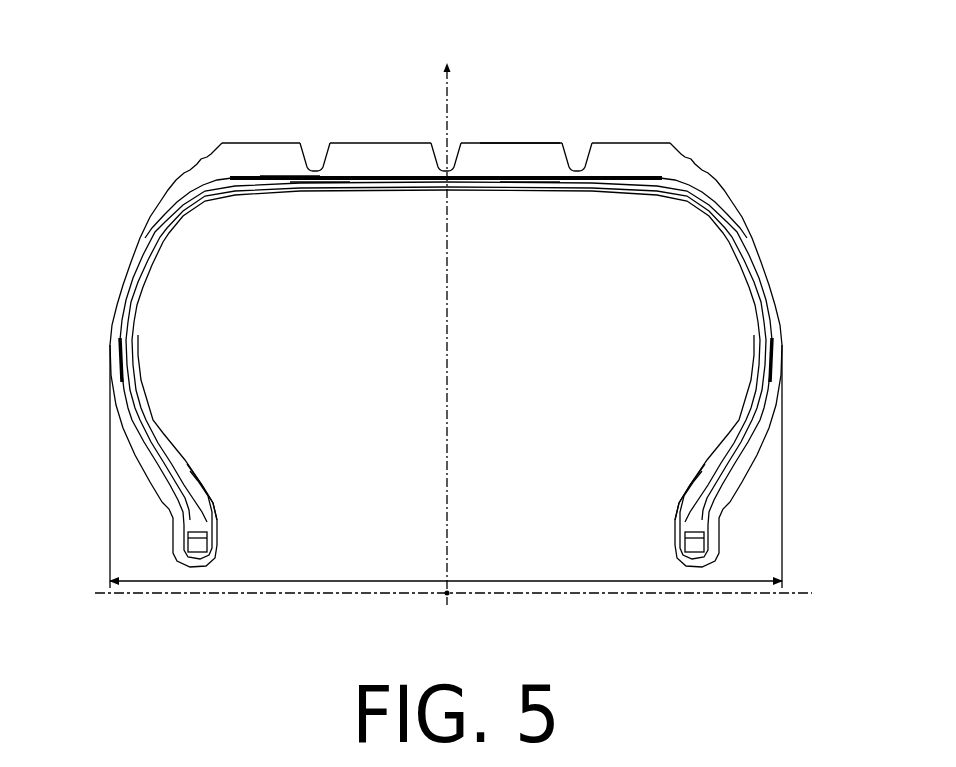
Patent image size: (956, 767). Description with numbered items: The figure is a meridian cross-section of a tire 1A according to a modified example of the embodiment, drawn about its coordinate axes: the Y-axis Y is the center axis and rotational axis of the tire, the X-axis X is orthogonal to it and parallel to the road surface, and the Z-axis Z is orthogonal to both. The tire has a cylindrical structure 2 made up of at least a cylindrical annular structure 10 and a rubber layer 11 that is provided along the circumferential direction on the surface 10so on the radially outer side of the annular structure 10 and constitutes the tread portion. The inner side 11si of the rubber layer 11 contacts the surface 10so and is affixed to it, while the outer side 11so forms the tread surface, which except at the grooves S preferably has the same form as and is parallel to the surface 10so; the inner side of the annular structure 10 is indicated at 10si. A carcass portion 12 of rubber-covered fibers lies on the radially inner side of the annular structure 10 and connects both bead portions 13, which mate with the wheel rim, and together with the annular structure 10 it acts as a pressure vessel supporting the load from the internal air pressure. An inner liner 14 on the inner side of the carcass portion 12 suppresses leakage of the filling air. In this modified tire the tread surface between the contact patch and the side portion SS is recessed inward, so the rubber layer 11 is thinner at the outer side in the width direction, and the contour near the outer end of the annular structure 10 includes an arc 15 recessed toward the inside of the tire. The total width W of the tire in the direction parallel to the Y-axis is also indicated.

The tire 1A is at (693, 115).
The structure 2 is at (262, 109).
The annular structure 10 is at (242, 177).
The surface on the outer side in the radial direction of the annular structure 10so is at (287, 175).
The inner surface of belt layer 10si is at (318, 187).
The rubber layer 11 is at (255, 160).
The outer side of the rubber layer 11so is at (523, 142).
The inner side of the rubber layer 11si is at (528, 186).
The carcass portion 12 is at (127, 297).
The bead portion 13 is at (220, 522).
The inner liner 14 is at (132, 338).
The arc 15 is at (197, 150).
The groove S is at (322, 157).
The side portion SS is at (115, 273).
The total width W is at (446, 466).
The X-axis X is at (452, 600).
The Y-axis Y is at (458, 593).
The Z-axis Z is at (448, 325).